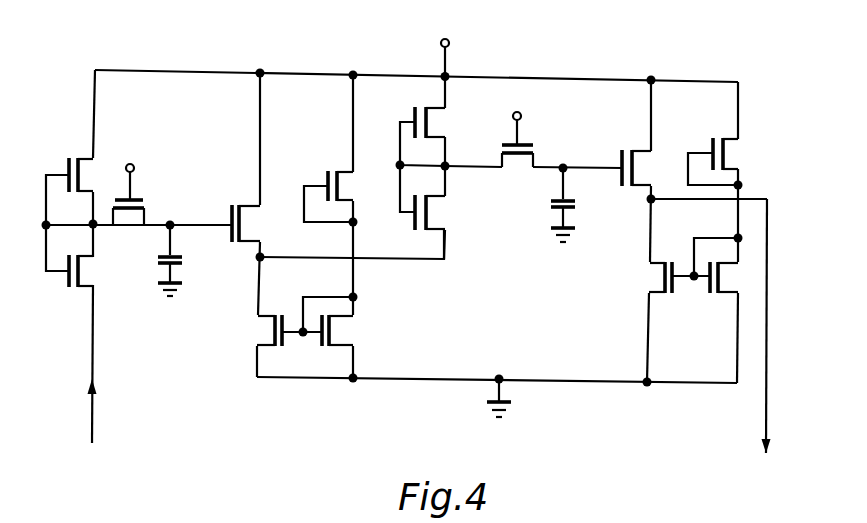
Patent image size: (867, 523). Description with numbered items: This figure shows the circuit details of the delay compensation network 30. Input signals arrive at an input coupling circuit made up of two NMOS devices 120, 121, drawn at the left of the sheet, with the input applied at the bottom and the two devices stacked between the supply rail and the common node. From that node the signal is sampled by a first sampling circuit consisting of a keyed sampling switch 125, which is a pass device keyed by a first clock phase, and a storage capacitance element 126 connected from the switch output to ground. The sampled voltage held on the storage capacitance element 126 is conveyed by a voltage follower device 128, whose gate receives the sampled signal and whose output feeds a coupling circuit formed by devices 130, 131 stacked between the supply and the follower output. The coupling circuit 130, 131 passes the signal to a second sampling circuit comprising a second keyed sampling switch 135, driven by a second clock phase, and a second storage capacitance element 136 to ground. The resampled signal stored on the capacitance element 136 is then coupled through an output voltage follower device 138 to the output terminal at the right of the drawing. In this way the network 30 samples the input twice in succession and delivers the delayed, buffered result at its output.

The delay compensation network 30 is at (518, 312).
The NMOS device 120 is at (121, 281).
The NMOS device 121 is at (119, 188).
The keyed sampling switch 125 is at (141, 250).
The storage capacitance element 126 is at (184, 263).
The voltage follower device 128 is at (291, 237).
The coupling circuit device 130 is at (477, 224).
The coupling circuit device 131 is at (477, 135).
The second sampling switch 135 is at (531, 197).
The second storage capacitance element 136 is at (577, 208).
The voltage follower device 138 is at (679, 176).